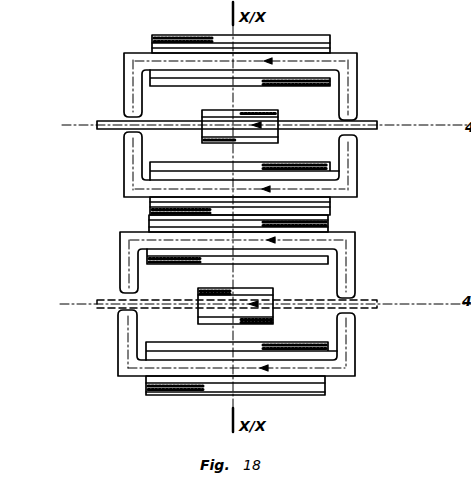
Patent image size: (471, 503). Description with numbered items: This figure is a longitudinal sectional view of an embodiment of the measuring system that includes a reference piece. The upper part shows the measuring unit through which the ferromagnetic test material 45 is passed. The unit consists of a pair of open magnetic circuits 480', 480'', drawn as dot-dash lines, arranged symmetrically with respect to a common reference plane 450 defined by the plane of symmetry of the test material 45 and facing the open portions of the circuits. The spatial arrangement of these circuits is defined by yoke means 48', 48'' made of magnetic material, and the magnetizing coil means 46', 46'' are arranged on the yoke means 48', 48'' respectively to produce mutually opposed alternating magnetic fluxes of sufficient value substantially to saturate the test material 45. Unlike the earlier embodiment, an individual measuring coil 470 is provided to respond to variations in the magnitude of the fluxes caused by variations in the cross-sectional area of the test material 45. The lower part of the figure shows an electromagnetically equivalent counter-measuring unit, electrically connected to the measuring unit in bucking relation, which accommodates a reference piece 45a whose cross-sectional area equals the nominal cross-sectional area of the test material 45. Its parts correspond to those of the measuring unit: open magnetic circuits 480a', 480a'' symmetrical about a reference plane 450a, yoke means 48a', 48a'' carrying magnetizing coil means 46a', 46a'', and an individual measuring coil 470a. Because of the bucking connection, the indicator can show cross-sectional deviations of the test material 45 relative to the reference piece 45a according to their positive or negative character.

The test material 45 is at (266, 124).
The reference piece 45a is at (265, 305).
The magnetizing coil means 46' is at (272, 51).
The magnetizing coil means 46'' is at (272, 165).
The magnetizing coil means of counter-measuring unit 46a' is at (272, 258).
The magnetizing coil means of counter-measuring unit 46a'' is at (273, 350).
The yoke means 48' is at (271, 86).
The yoke means 48'' is at (273, 200).
The yoke means of counter-measuring unit 48a' is at (273, 231).
The yoke means of counter-measuring unit 48a'' is at (274, 379).
The common reference plane 450 is at (38, 118).
The common reference plane of counter-measuring unit 450a is at (35, 300).
The measuring coil 470 is at (268, 140).
The measuring coil of counter-measuring unit 470a is at (265, 290).
The open magnetic circuit 480' is at (208, 86).
The open magnetic circuit 480'' is at (207, 164).
The open magnetic circuit of counter-measuring unit 480a' is at (206, 265).
The open magnetic circuit of counter-measuring unit 480a'' is at (205, 343).